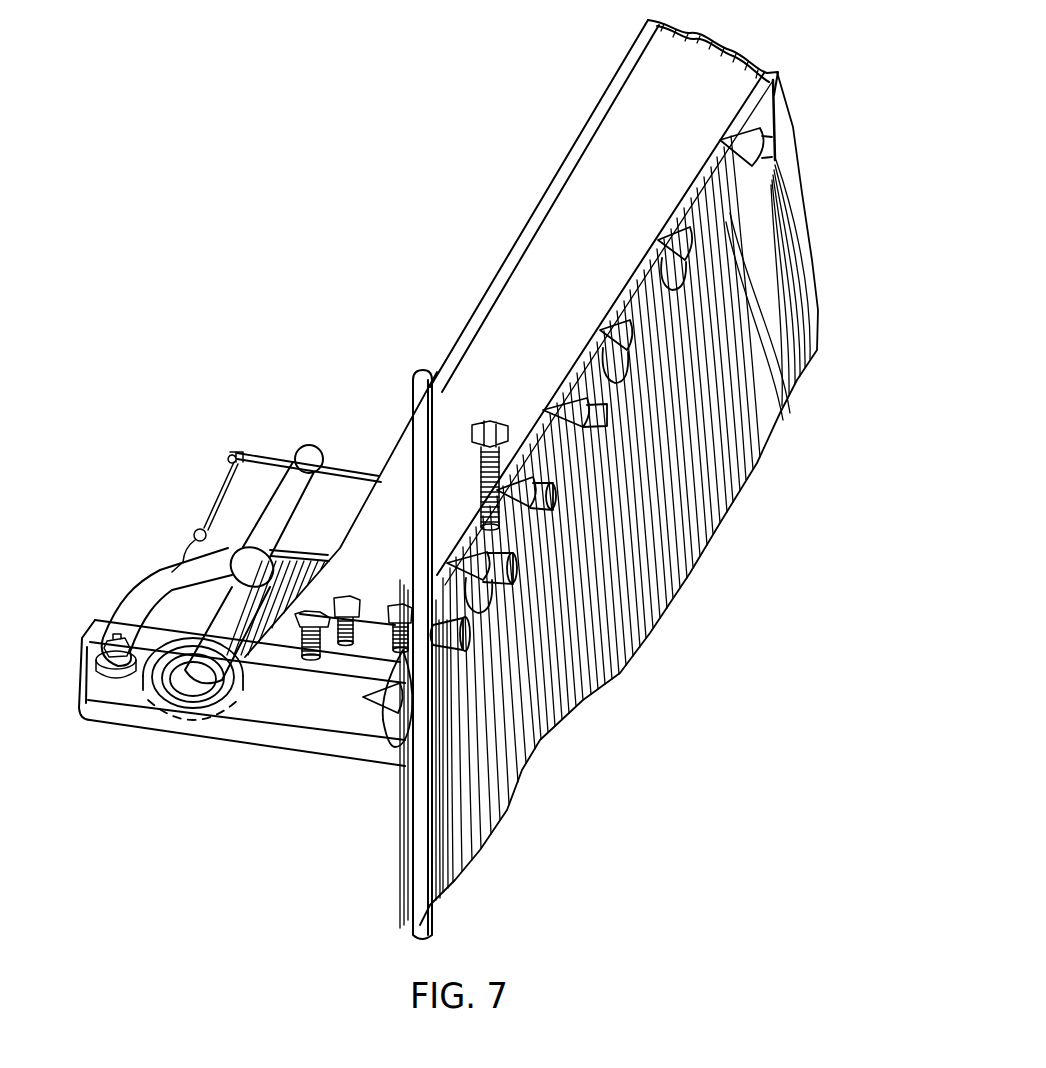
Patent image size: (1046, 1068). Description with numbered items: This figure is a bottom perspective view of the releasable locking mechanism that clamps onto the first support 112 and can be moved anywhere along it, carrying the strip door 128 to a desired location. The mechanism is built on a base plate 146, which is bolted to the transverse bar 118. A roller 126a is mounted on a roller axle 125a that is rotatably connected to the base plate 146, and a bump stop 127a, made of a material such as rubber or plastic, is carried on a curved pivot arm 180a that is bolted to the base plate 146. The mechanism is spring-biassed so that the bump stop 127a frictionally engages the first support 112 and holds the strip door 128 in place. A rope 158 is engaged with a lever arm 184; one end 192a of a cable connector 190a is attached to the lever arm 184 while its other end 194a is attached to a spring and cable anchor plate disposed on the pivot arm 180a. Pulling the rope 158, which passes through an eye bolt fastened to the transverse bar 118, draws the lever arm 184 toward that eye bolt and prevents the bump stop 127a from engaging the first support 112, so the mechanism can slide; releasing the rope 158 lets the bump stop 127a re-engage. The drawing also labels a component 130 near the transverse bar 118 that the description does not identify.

The first support 112 is at (300, 743).
The transverse bar 118 is at (566, 191).
The roller axle 125a is at (297, 473).
The roller 126a is at (153, 697).
The bump stop 127a is at (103, 672).
The strip door 128 is at (720, 492).
The fastening clip 130 is at (745, 141).
The base plate 146 is at (282, 637).
The rope 158 is at (420, 868).
The curved pivot arm 180a is at (132, 588).
The lever arm 184 is at (342, 470).
The cable connector 190a is at (220, 500).
The end of cable connector 192a is at (233, 470).
The other end of cable connector 194a is at (200, 532).